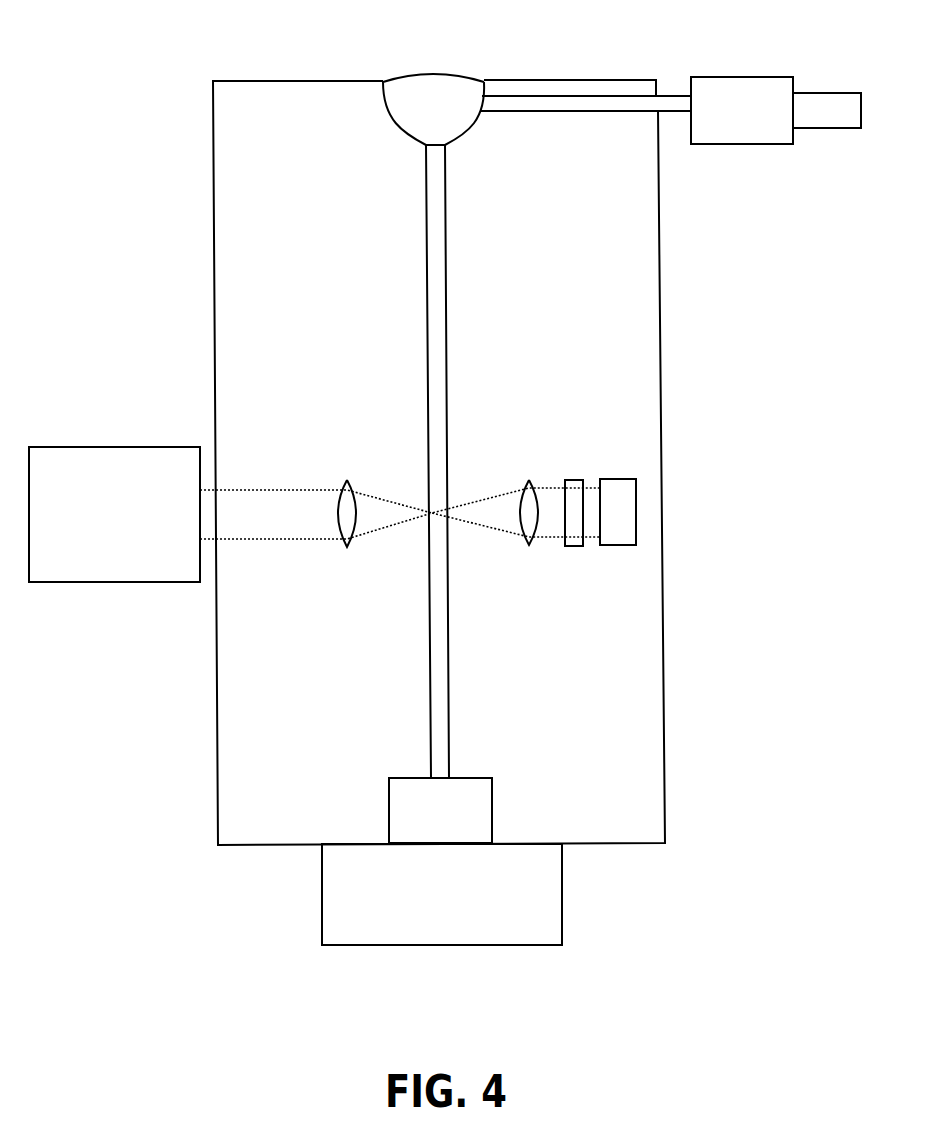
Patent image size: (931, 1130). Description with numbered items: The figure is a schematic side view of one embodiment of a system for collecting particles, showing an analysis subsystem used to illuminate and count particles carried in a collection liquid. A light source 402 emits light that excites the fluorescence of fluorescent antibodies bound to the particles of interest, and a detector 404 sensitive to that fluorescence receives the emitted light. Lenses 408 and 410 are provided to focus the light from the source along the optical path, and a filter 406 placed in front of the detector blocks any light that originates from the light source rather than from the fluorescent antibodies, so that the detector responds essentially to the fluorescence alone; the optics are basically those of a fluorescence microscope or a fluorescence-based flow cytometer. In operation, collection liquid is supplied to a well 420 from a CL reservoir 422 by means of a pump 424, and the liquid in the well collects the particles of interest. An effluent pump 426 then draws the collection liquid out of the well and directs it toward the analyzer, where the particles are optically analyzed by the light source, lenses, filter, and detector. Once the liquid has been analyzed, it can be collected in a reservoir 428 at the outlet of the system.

The light source 402 is at (114, 514).
The detector 404 is at (619, 479).
The filter 406 is at (574, 546).
The lens 408 is at (348, 480).
The lens 410 is at (529, 480).
The well 420 is at (462, 50).
The CL reservoir 422 is at (742, 110).
The pump 424 is at (827, 110).
The effluent pump 426 is at (440, 810).
The reservoir 428 is at (442, 894).